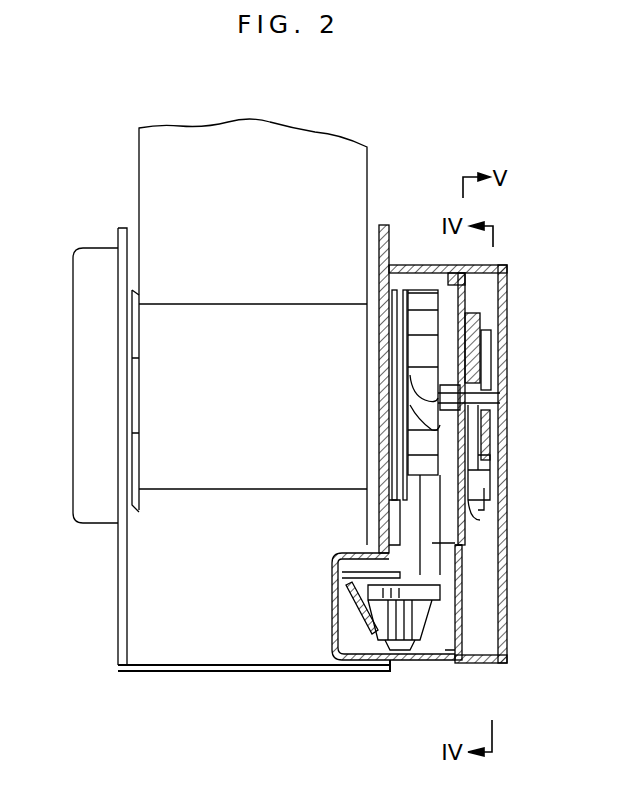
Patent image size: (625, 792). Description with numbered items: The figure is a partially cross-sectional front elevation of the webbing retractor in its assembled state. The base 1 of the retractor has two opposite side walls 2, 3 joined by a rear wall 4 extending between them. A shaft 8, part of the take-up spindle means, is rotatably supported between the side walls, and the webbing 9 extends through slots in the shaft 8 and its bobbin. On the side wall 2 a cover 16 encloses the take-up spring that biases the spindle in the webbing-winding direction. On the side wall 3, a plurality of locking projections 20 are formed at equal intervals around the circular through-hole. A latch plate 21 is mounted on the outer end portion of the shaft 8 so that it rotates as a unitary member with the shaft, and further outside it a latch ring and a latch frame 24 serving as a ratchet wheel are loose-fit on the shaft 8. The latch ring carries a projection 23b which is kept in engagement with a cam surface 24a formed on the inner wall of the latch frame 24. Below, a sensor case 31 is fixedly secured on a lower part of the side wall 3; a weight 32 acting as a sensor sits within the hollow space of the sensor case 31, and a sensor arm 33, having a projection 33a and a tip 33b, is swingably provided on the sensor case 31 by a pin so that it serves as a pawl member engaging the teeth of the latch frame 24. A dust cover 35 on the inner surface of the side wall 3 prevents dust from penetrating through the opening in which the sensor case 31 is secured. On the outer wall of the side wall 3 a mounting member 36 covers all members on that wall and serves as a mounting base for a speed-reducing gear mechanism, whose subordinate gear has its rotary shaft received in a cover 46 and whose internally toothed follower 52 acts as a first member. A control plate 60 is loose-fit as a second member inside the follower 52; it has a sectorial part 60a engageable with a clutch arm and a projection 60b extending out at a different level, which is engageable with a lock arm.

The base 1 is at (200, 682).
The side wall 2 is at (118, 650).
The side wall 3 is at (384, 224).
The rear wall 4 is at (312, 673).
The shaft 8 is at (379, 396).
The webbing 9 is at (340, 162).
The cover 16 is at (84, 332).
The locking projections 20 is at (392, 318).
The latch plate 21 is at (403, 334).
The latch frame 24 is at (410, 356).
The projection 23b is at (410, 412).
The cam surface 24a is at (410, 432).
The sensor case 31 is at (442, 662).
The weight 32 is at (372, 658).
The sensor arm 33 is at (432, 543).
The projection 33a is at (346, 572).
The tip 33b is at (390, 510).
The dust cover 35 is at (332, 636).
The mounting member 36 is at (470, 290).
The cover 46 is at (500, 316).
The follower 52 is at (486, 325).
The control plate 60 is at (478, 457).
The sectorial part 60a is at (480, 522).
The projection 60b is at (486, 500).